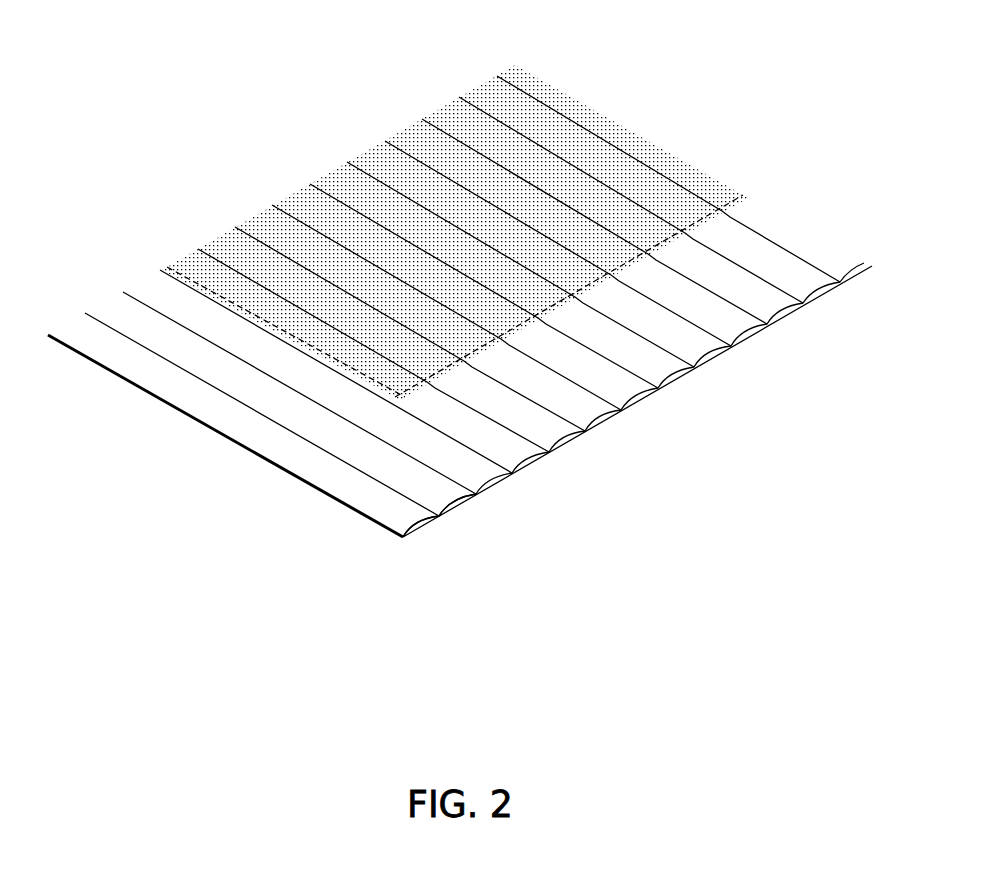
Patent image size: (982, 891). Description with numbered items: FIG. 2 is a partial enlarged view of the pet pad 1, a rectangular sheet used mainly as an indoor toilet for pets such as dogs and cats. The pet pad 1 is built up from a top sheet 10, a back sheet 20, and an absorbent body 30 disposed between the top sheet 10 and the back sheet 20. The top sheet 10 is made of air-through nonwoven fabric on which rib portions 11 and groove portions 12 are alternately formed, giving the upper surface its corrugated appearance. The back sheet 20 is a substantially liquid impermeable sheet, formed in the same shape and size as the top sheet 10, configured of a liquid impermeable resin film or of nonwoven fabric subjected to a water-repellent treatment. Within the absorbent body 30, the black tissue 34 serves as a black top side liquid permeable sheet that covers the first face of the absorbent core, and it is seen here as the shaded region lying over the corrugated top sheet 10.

The pet pad 1 is at (460, 337).
The top sheet 10 is at (244, 432).
The rib portions 11 is at (458, 493).
The groove portions 12 is at (481, 491).
The back sheet 20 is at (586, 435).
The absorbent body 30 is at (455, 232).
The black tissue 34 is at (267, 220).